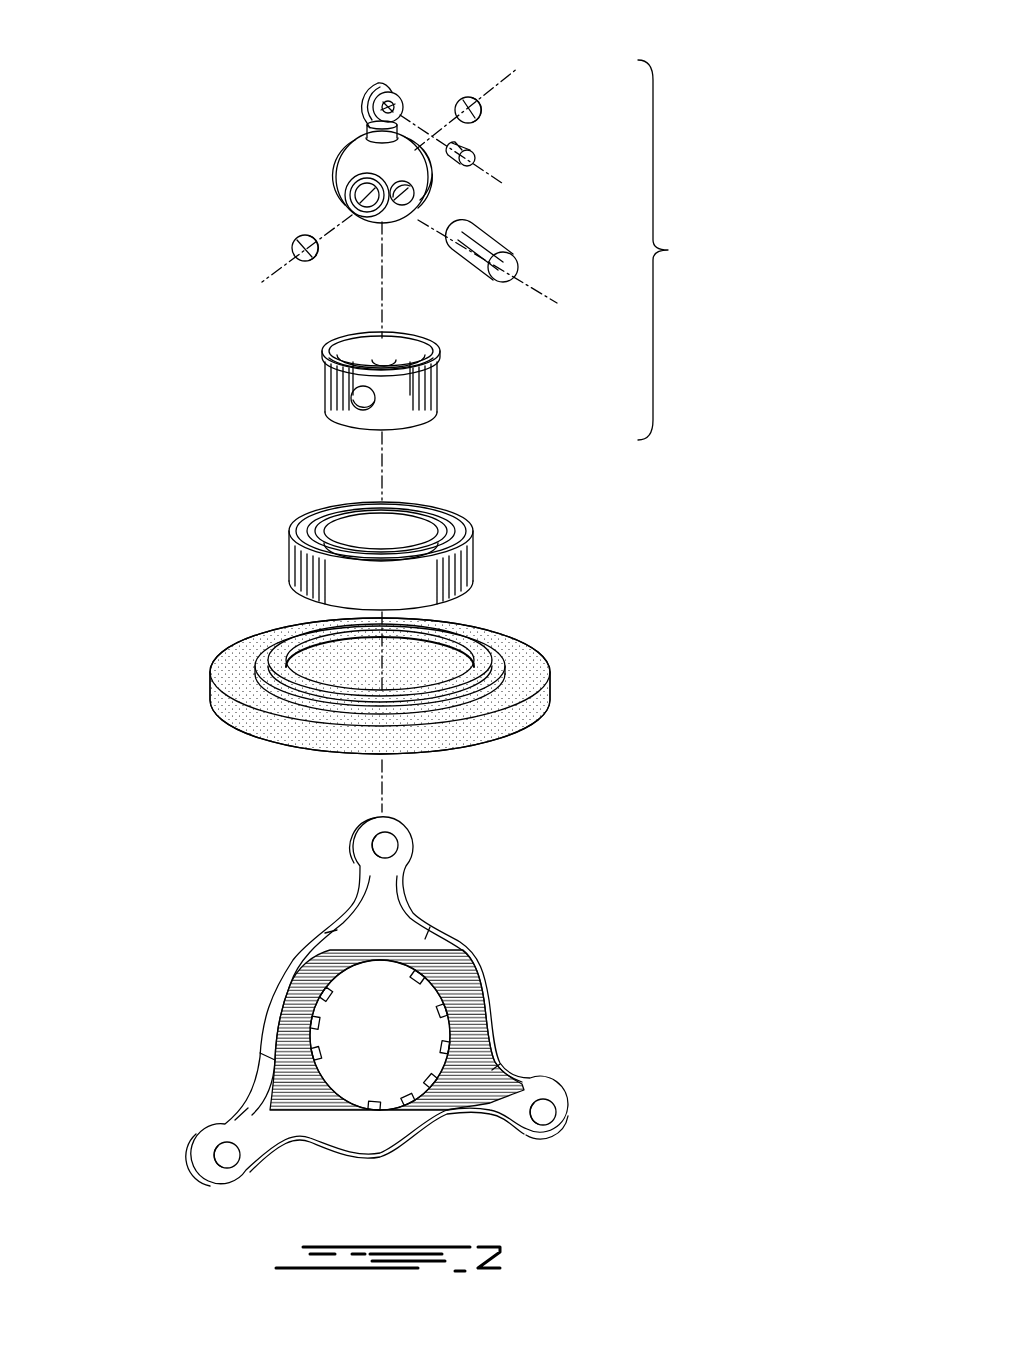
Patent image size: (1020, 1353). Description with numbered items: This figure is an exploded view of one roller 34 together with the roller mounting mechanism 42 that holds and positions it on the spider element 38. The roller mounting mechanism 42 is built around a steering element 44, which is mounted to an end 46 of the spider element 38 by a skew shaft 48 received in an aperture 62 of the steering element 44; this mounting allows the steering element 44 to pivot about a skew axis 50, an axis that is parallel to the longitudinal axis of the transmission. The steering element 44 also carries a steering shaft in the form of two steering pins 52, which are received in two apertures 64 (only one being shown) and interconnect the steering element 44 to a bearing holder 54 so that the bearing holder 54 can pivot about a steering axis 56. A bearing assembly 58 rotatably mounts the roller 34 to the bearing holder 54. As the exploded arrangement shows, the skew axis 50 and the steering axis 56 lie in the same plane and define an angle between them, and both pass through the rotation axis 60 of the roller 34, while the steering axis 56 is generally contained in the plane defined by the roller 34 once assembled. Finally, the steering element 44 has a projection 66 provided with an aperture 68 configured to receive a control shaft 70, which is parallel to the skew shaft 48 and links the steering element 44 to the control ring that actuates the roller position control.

The roller 34 is at (525, 665).
The spider element 38 is at (455, 962).
The roller mounting mechanism 42 is at (676, 250).
The steering element 44 is at (360, 150).
The end of the spider element 46 is at (405, 842).
The skew shaft 48 is at (483, 243).
The skew axis 50 is at (540, 297).
The steering pins 52 is at (466, 97).
The bearing holder 54 is at (448, 391).
The steering axis 56 is at (276, 286).
The bearing assembly 58 is at (465, 567).
The rotation axis 60 is at (386, 477).
The aperture 62 is at (403, 202).
The apertures 64 is at (371, 200).
The projection 66 is at (375, 128).
The aperture 68 is at (391, 95).
The control shaft 70 is at (468, 153).